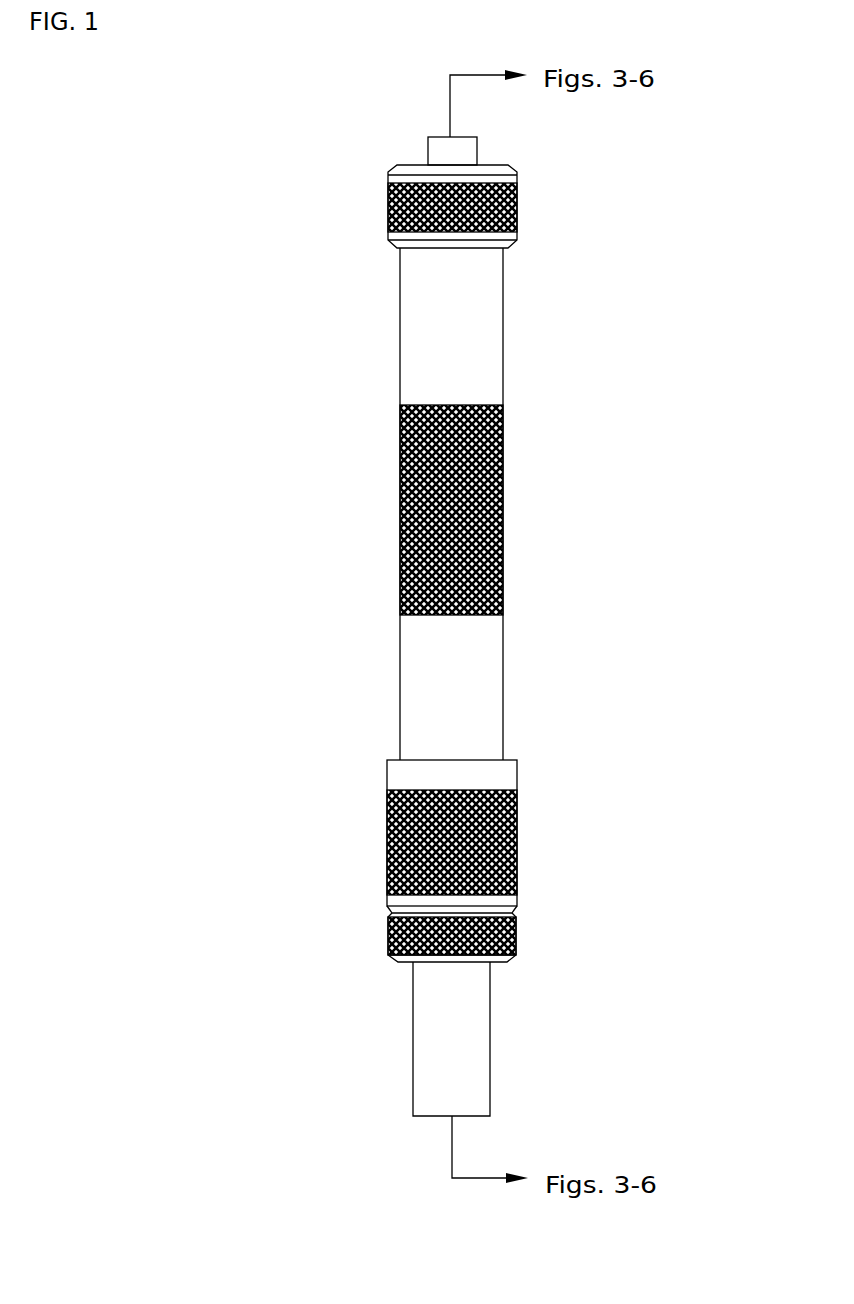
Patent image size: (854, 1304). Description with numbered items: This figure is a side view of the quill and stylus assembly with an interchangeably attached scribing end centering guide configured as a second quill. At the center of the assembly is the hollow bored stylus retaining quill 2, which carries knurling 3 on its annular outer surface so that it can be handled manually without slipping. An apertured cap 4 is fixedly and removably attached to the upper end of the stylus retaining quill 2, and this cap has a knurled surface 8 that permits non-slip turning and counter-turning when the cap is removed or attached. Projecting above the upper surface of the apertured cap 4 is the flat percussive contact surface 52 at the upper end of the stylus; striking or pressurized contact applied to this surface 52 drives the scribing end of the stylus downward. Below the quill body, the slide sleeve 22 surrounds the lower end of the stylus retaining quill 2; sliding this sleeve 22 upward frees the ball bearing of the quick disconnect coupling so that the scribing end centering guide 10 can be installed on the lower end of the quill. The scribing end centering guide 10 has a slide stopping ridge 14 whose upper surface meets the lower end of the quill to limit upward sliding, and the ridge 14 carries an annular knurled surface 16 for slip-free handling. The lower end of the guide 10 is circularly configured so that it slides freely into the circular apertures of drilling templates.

The percussive contact surface 52 is at (436, 136).
The apertured cap 4 is at (507, 168).
The knurled surface 8 is at (517, 208).
The stylus retaining quill 2 is at (490, 348).
The knurling 3 is at (493, 530).
The slide sleeve 22 is at (503, 780).
The slide stopping ridge 14 is at (512, 913).
The annular knurled surface 16 is at (515, 942).
The scribing end centering guide 10 is at (390, 1048).